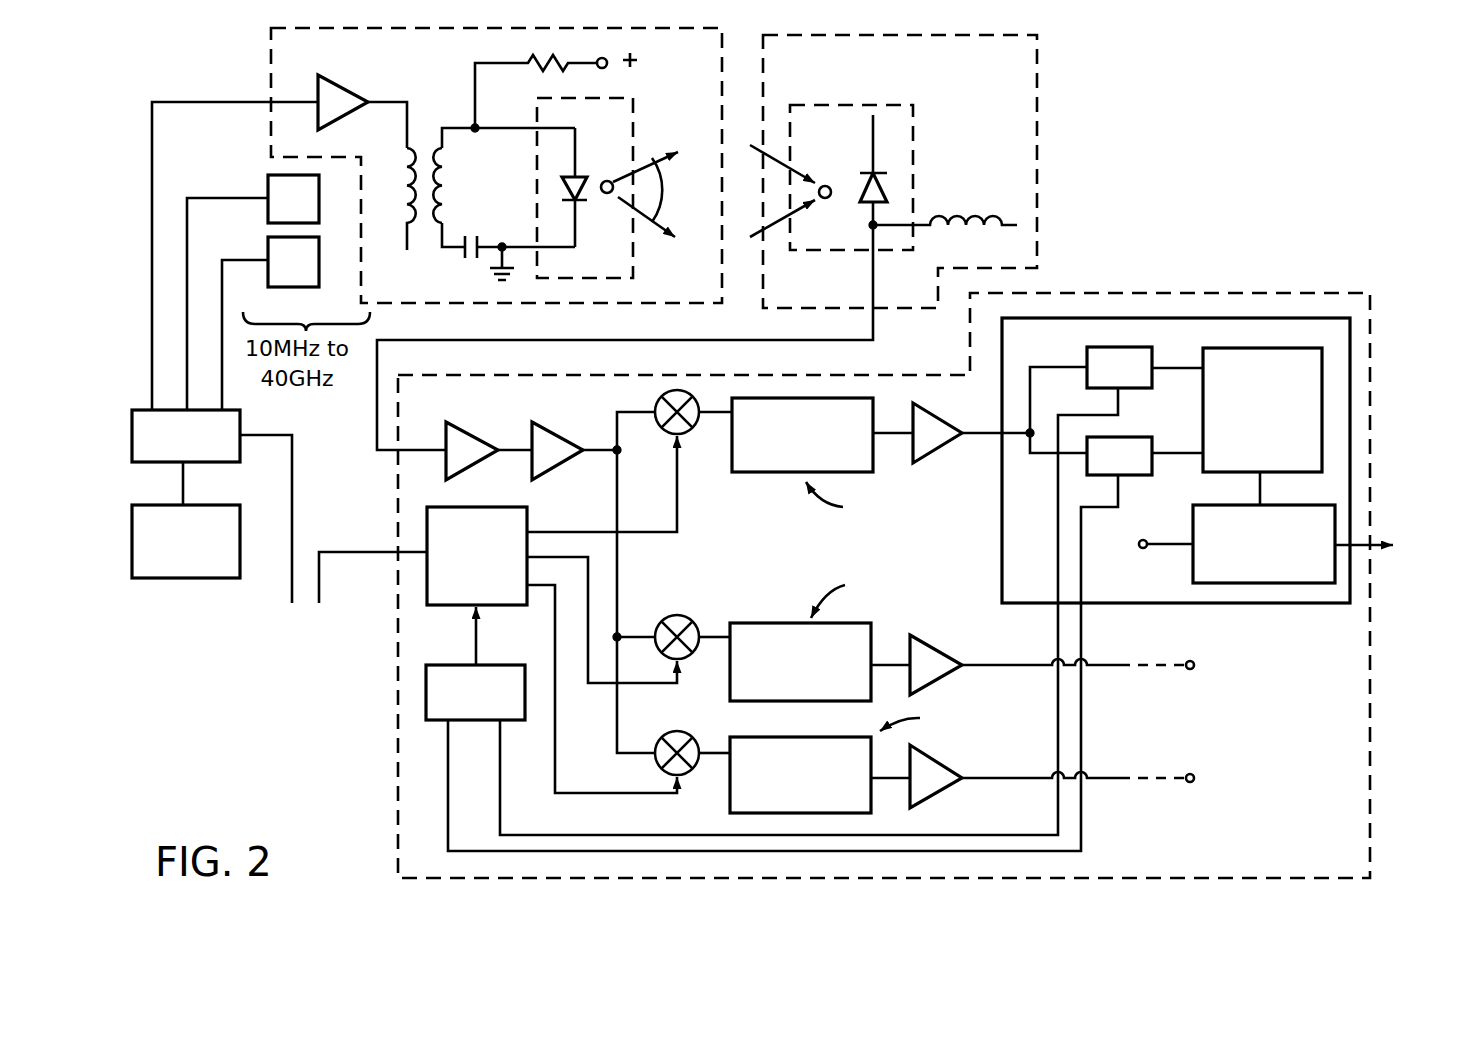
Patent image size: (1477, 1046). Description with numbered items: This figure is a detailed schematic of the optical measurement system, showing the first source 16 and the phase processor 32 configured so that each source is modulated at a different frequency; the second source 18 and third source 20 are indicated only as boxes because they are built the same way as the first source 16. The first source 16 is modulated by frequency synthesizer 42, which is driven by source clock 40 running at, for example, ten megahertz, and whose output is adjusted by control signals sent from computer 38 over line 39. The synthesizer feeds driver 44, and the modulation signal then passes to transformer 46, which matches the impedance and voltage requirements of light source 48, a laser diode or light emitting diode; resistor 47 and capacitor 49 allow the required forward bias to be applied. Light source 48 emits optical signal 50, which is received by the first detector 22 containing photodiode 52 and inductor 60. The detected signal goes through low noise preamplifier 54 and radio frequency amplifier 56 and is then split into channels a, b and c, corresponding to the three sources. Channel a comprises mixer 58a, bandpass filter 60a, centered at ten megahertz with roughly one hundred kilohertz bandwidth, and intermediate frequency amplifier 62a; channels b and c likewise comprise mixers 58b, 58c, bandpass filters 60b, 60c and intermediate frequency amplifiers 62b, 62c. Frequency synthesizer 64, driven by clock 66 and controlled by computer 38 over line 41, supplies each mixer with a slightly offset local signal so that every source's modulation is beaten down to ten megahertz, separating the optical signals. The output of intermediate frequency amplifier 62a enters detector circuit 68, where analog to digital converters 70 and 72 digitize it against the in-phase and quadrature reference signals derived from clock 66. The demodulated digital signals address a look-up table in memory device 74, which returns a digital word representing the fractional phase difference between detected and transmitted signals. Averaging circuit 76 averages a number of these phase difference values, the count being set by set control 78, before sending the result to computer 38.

The source S1 16 is at (270, 62).
The source S2 18 is at (268, 180).
The source S3 20 is at (268, 243).
The detector D1 22 is at (1037, 112).
The phase processor 32 is at (397, 772).
The computer 38 is at (857, 612).
The line 39 is at (292, 497).
The source clock 40 is at (178, 580).
The line 41 is at (362, 552).
The frequency synthesizer 42 is at (172, 462).
The driver 44 is at (341, 88).
The transformer 46 is at (418, 115).
The resistor 47 is at (538, 68).
The light source 48 is at (636, 102).
The capacitor 49 is at (458, 262).
The optical signal 50 is at (661, 190).
The photodiode 52 is at (915, 133).
The low noise preamplifier 54 is at (474, 440).
The radio frequency amplifier 56 is at (563, 440).
The mixer 58a is at (668, 434).
The mixer 58b is at (690, 616).
The mixer 58c is at (683, 732).
The inductor 60 is at (962, 212).
The bandpass filter 60a is at (760, 472).
The bandpass filter 60b is at (771, 623).
The bandpass filter 60c is at (730, 808).
The intermediate frequency amplifier 62a is at (932, 446).
The intermediate frequency amplifier 62b is at (940, 650).
The intermediate frequency amplifier 62c is at (940, 792).
The frequency synthesizer 64 is at (465, 507).
The clock 66 is at (460, 665).
The detector circuit 68 is at (1250, 603).
The analog to digital converter 70 is at (1138, 347).
The analog to digital converter 72 is at (1128, 437).
The memory device 74 is at (1249, 438).
The averaging circuit 76 is at (1190, 560).
The set control 78 is at (1160, 540).